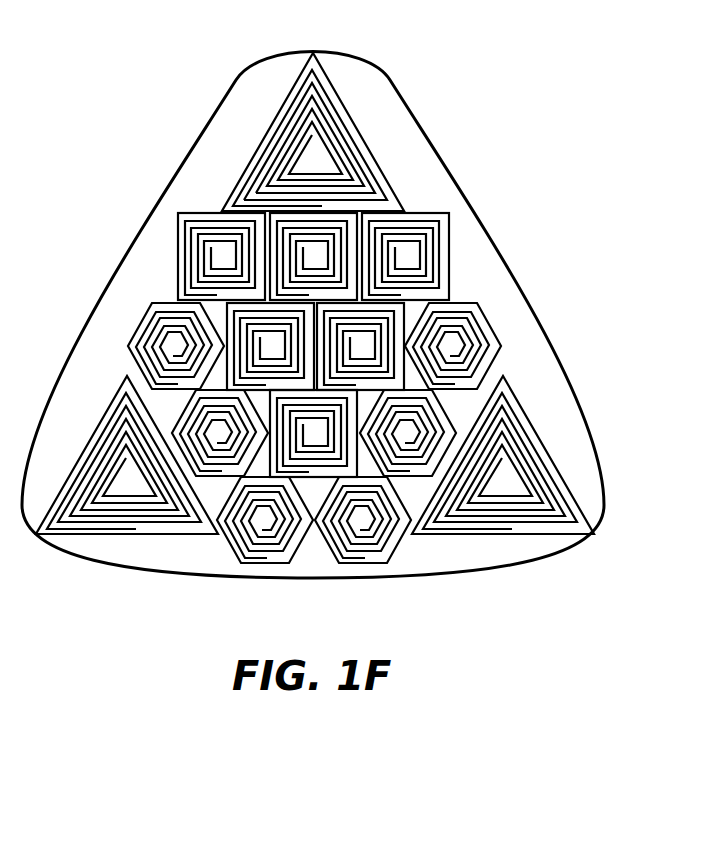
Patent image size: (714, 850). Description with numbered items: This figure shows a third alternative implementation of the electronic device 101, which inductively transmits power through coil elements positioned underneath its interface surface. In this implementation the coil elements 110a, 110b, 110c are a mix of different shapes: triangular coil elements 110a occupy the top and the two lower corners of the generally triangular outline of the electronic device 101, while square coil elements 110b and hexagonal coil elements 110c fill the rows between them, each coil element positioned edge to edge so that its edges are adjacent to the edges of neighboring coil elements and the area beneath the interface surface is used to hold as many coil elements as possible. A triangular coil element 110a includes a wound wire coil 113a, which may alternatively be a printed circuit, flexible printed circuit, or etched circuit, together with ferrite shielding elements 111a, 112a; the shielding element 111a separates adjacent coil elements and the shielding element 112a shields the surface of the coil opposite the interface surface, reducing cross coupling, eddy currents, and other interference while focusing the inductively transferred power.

The electronic device 101 is at (321, 48).
The triangular coil element 110a is at (278, 114).
The shielding element 111a is at (296, 82).
The shielding element 112a is at (286, 118).
The wound wire coil 113a is at (275, 148).
The coil element 110b is at (186, 208).
The coil element 110c is at (149, 297).